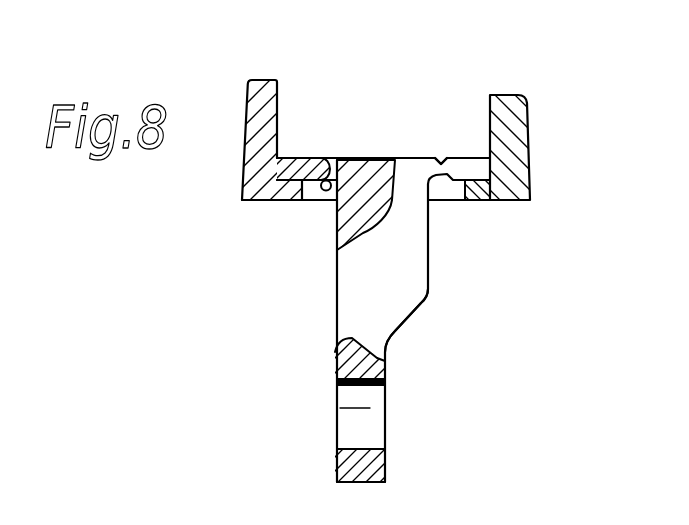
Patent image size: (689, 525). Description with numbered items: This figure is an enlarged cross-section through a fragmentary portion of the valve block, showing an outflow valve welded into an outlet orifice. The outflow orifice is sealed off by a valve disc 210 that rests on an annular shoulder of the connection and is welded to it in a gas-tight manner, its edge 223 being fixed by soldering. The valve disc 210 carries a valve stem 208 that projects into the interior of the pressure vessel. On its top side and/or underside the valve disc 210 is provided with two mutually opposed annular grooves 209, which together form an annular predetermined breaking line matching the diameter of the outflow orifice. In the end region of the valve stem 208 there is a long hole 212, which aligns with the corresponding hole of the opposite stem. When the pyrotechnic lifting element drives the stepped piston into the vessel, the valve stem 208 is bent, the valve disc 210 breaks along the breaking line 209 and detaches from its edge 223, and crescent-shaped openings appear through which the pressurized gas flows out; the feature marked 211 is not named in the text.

The valve stem 208 is at (413, 183).
The annular grooves 209 is at (338, 177).
The valve disc 210 is at (434, 136).
The shoulder 211 is at (418, 251).
The long hole 212 is at (373, 405).
The edge 223 is at (475, 168).